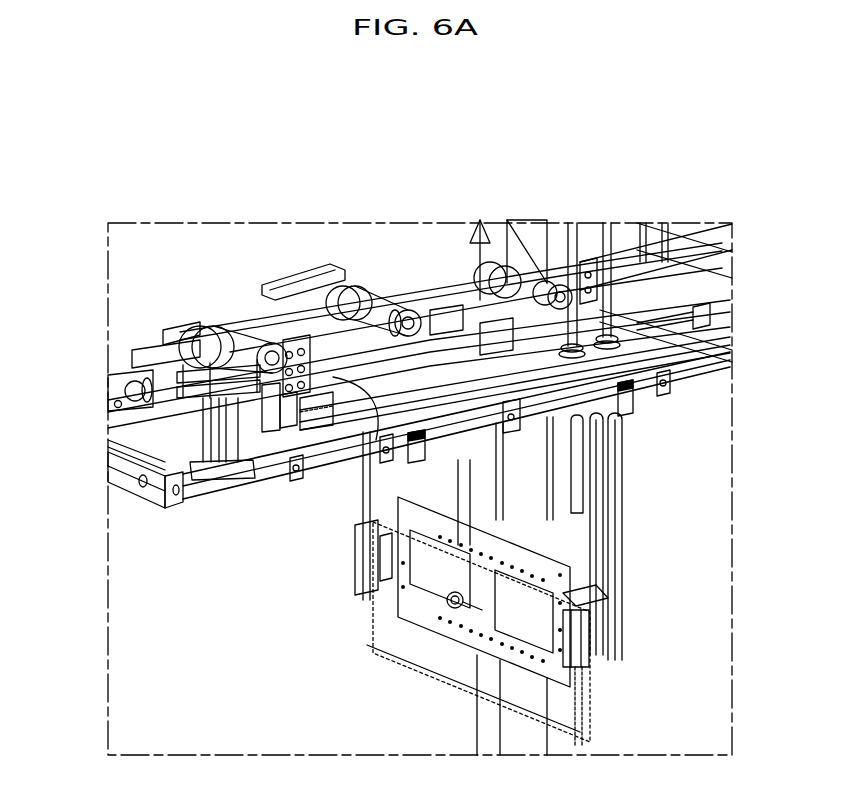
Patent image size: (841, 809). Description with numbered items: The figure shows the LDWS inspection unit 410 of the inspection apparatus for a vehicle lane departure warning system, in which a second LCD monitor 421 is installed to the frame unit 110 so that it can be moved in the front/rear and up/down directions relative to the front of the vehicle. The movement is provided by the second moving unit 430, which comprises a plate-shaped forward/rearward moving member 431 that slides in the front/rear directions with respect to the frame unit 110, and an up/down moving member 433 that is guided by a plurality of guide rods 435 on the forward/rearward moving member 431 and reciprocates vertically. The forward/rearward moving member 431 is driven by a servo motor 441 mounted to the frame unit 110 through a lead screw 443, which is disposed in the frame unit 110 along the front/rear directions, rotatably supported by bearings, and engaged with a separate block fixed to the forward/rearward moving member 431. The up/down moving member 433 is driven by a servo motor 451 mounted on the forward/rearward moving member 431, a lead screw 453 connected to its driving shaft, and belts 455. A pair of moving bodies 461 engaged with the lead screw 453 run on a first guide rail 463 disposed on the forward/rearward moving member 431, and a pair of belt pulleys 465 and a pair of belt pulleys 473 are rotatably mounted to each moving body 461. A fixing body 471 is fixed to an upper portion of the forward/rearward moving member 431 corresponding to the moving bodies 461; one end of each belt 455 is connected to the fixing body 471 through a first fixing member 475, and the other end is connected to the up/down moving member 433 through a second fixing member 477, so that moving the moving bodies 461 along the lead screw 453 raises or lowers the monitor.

The LDWS inspection unit 410 is at (381, 126).
The belt pulleys 465 is at (379, 366).
The moving bodies 461 is at (450, 269).
The lead screw 453 is at (303, 281).
The belts 455 is at (502, 227).
The belt pulleys 473 is at (543, 230).
The guide rods 435 is at (600, 265).
The lead screw 443 is at (656, 267).
The servo motor 451 is at (97, 375).
The forward/rearward moving member 431 is at (184, 426).
The second moving unit 430 is at (114, 475).
The frame unit 110 is at (400, 472).
The servo motor 441 is at (316, 470).
The first guide rail 463 is at (428, 500).
The fixing body 471 is at (450, 399).
The first fixing member 475 is at (705, 407).
The second fixing member 477 is at (678, 536).
The up/down moving member 433 is at (680, 630).
The second LCD monitor 421 is at (584, 626).